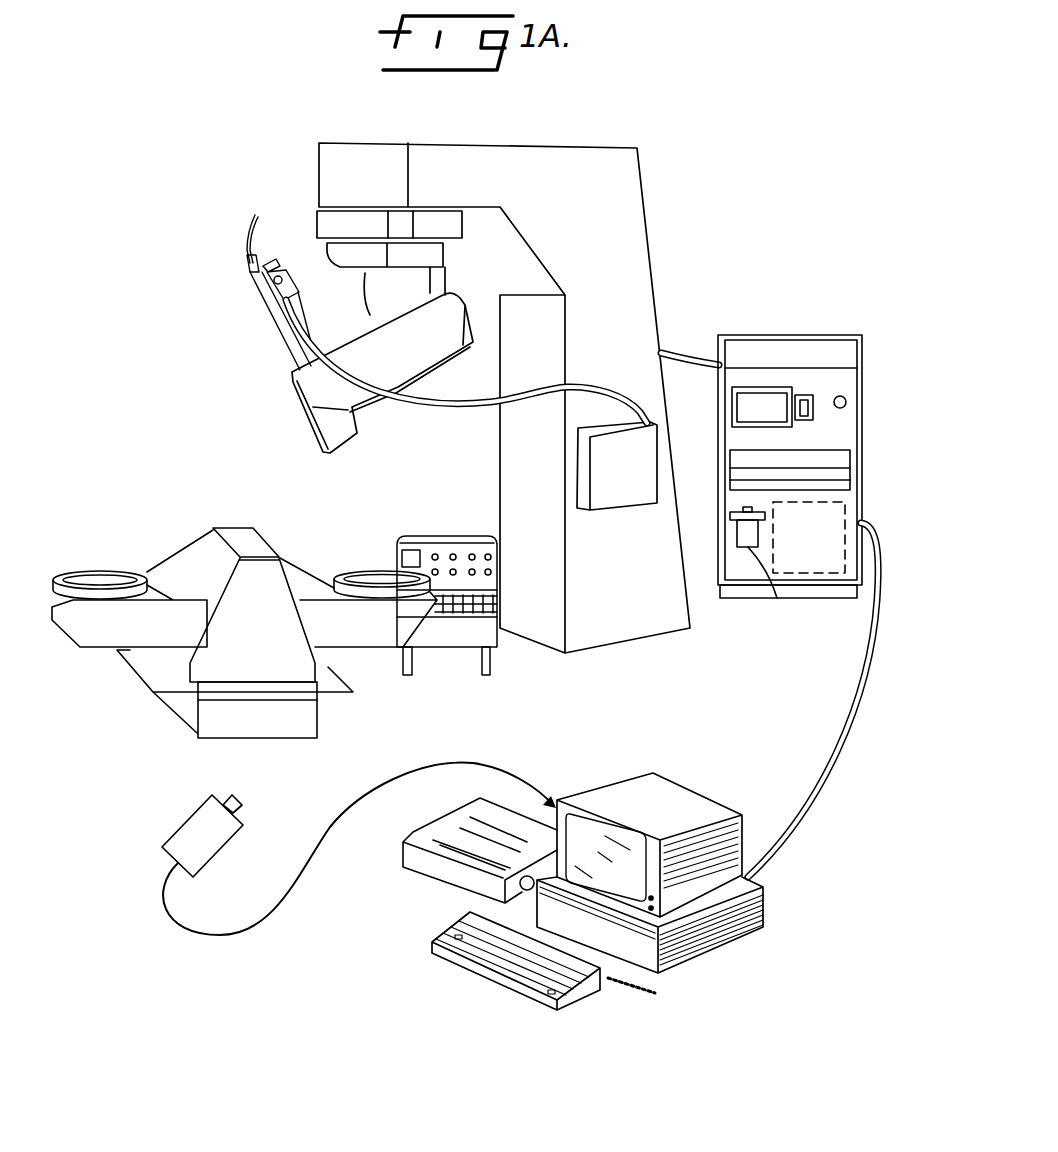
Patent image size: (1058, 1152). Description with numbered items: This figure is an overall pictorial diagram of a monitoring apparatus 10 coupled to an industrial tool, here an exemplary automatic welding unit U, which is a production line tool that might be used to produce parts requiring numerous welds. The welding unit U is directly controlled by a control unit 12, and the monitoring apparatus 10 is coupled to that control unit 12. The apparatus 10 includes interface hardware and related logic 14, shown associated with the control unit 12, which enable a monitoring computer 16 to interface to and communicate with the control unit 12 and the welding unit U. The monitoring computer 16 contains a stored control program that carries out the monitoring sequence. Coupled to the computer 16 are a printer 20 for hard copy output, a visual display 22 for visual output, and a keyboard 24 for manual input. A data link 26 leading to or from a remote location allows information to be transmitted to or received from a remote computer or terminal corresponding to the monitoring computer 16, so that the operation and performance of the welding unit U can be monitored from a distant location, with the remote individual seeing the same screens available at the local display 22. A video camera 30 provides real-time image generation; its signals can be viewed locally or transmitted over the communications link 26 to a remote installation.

The automatic welding unit U is at (556, 160).
The monitoring apparatus 10 is at (306, 946).
The control unit 12 is at (812, 335).
The interface hardware and related logic 14 is at (807, 550).
The monitoring computer 16 is at (651, 1007).
The printer 20 is at (488, 803).
The visual display 22 is at (712, 810).
The keyboard 24 is at (438, 932).
The data link 26 is at (826, 907).
The video camera 30 is at (185, 805).